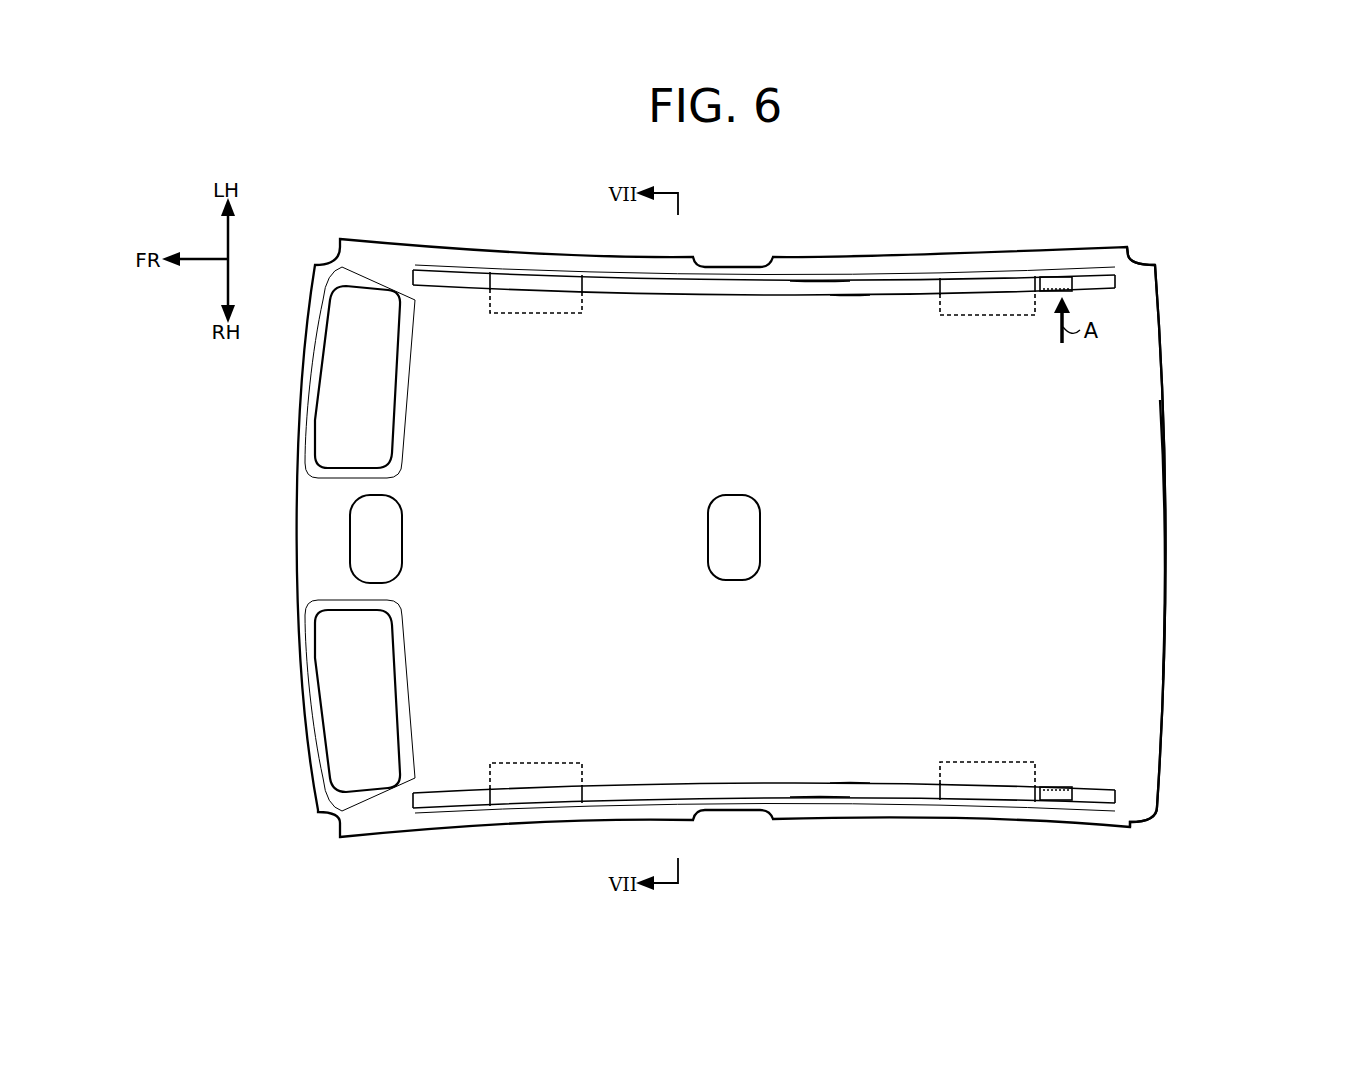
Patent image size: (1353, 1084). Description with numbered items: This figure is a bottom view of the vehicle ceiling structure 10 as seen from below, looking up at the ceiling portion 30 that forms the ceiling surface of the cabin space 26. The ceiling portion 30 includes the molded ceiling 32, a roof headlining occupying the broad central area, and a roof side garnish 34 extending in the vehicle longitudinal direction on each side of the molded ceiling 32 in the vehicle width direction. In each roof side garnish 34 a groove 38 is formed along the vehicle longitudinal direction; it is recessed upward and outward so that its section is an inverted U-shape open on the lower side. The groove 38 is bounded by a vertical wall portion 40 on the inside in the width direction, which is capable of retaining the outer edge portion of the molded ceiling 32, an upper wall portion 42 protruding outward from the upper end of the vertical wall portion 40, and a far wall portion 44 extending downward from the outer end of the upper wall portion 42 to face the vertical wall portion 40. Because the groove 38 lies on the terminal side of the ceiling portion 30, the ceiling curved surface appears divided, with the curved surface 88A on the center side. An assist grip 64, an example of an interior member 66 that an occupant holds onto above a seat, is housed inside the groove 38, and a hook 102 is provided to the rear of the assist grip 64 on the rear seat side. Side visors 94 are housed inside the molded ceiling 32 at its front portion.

The cabin space 26 is at (832, 553).
The ceiling portion 30 is at (1182, 349).
The molded ceiling 32 is at (1168, 430).
The roof side garnish 34 is at (1160, 267).
The vehicle ceiling structure 10 is at (764, 539).
The groove 38 is at (740, 300).
The vertical wall portion 40 is at (870, 290).
The upper wall portion 42 is at (823, 286).
The far wall portion 44 is at (849, 290).
The assist grip 64 is at (533, 318).
The interior member 66 is at (802, 542).
The hook 102 is at (1055, 275).
The curved surface on the center side 88A is at (1140, 535).
The side visor 94 is at (375, 390).